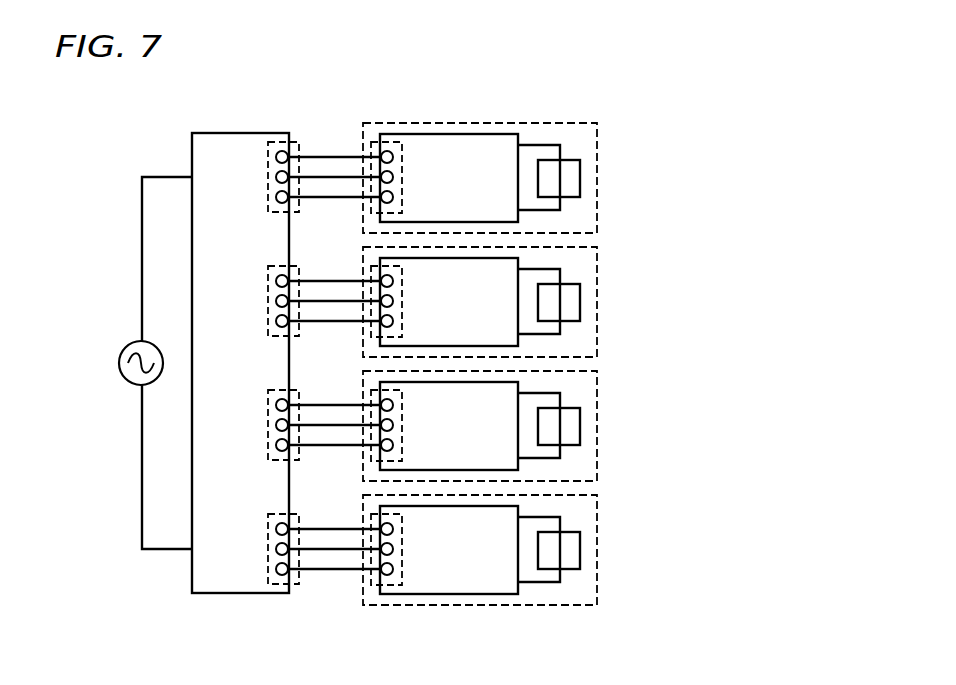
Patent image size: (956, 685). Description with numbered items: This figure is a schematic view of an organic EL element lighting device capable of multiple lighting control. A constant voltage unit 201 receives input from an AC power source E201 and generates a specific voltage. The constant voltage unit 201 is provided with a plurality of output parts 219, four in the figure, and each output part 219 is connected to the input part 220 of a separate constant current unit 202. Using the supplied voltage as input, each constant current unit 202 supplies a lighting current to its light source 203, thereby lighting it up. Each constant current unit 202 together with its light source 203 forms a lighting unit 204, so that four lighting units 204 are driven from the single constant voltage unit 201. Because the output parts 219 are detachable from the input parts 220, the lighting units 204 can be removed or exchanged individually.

The constant voltage unit 201 is at (234, 133).
The AC power source E201 is at (135, 363).
The output part 219 is at (268, 178).
The input part 220 is at (402, 177).
The constant current unit 202 is at (441, 136).
The light source 203 is at (574, 180).
The lighting unit 204 is at (593, 141).